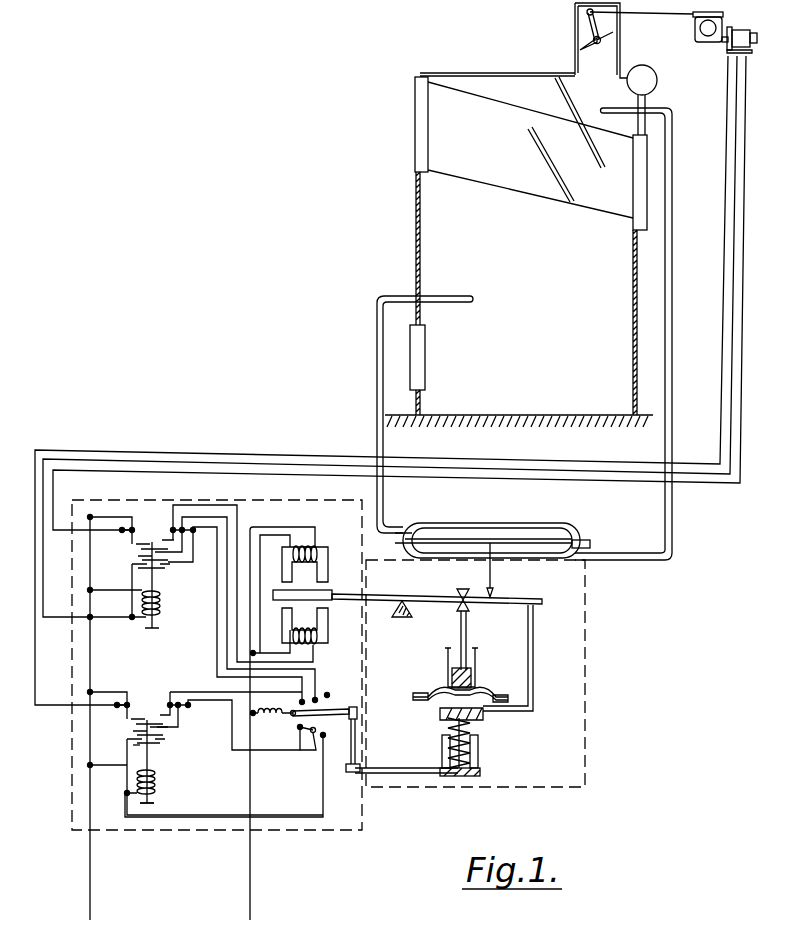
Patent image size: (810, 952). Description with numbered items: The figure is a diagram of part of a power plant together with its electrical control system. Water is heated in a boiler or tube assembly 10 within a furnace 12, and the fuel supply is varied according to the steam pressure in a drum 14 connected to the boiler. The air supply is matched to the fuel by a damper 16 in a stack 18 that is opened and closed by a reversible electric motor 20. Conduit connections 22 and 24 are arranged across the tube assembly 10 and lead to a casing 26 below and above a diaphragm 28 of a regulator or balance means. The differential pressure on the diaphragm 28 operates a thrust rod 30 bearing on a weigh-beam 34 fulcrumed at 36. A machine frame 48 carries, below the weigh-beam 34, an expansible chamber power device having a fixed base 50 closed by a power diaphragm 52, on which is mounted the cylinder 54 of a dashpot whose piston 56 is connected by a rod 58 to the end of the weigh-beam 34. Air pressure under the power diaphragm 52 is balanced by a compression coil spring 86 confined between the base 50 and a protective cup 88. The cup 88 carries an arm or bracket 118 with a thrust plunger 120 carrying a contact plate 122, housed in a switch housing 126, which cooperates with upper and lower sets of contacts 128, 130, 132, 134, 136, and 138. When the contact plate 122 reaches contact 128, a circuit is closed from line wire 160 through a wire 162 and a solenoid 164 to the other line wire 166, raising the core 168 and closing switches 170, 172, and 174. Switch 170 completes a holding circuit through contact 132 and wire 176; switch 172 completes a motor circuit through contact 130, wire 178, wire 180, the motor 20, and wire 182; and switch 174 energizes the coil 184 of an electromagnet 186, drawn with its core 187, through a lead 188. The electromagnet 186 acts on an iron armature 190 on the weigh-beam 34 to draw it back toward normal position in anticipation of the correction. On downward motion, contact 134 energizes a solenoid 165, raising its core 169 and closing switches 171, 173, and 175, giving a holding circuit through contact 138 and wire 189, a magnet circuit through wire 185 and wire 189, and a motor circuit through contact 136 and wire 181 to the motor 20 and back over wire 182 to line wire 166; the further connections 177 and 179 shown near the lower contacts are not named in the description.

The boiler or tube assembly 10 is at (478, 100).
The furnace 12 is at (415, 190).
The drum 14 is at (657, 80).
The damper 16 is at (615, 34).
The stack 18 is at (575, 22).
The reversible electric motor 20 is at (750, 35).
The conduit connection 22 is at (675, 178).
The conduit connection 24 is at (432, 296).
The casing 26 is at (533, 526).
The diaphragm 28 is at (588, 541).
The thrust rod 30 is at (493, 575).
The weigh-beam 34 is at (392, 596).
The fulcrum 36 is at (402, 620).
The machine frame 48 is at (586, 693).
The fixed base 50 is at (440, 712).
The power diaphragm 52 is at (482, 690).
The cylinder 54 is at (448, 652).
The piston 56 is at (452, 674).
The rod 58 is at (468, 627).
The compression coil spring 86 is at (472, 722).
The protective cup 88 is at (479, 748).
The arm or bracket 118 is at (390, 772).
The thrust plunger 120 is at (357, 745).
The contact plate 122 is at (336, 703).
The switch housing 126 is at (72, 787).
The contact 128 is at (328, 693).
The contact 130 is at (313, 702).
The contact 132 is at (301, 700).
The contact 134 is at (325, 734).
The contact 136 is at (311, 732).
The contact 138 is at (298, 727).
The line wire 160 is at (250, 850).
The wire 162 is at (170, 690).
The solenoid 164 is at (160, 603).
The solenoid 165 is at (155, 772).
The line wire 166 is at (90, 850).
The core 168 is at (134, 570).
The solenoid core 169 is at (154, 800).
The switch 170 is at (158, 570).
The switch 171 is at (130, 745).
The switch 172 is at (138, 542).
The switch 173 is at (128, 724).
The switch 174 is at (157, 540).
The switch 175 is at (145, 715).
The wire 176 is at (217, 610).
The conductor 177 is at (316, 752).
The wire 178 is at (227, 636).
The conductor 179 is at (275, 752).
The wire 180 is at (242, 459).
The wire 181 is at (195, 450).
The wire 182 is at (290, 470).
The coil 184 is at (316, 642).
The wire 185 is at (303, 546).
The electromagnet 186 is at (328, 626).
The electromagnet 187 is at (328, 560).
The lead 188 is at (250, 527).
The wire 189 is at (252, 522).
The iron armature 190 is at (276, 592).